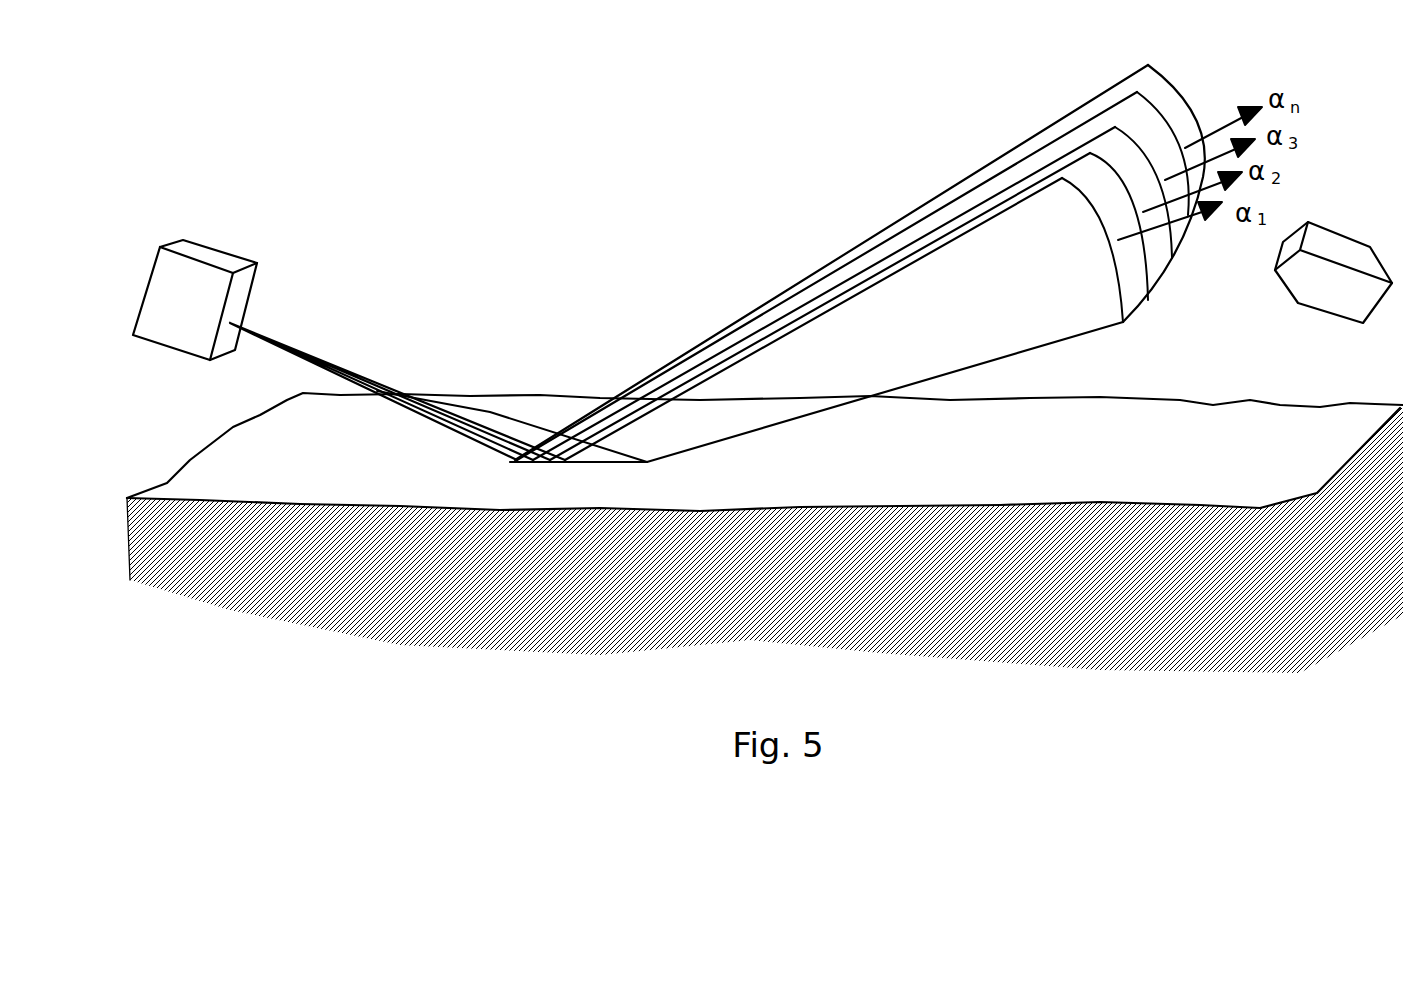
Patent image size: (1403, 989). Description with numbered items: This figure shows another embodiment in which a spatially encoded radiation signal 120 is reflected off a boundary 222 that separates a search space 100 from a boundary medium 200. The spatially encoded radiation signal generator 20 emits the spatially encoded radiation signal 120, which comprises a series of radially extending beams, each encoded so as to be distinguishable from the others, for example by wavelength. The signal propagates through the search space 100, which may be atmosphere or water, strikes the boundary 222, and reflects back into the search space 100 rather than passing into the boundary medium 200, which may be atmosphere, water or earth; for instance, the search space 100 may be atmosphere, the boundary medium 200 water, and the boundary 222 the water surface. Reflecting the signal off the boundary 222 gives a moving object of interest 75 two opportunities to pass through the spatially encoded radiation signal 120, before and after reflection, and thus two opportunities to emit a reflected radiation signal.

The spatially encoded radiation signal generator 20 is at (192, 255).
The search space 100 is at (527, 277).
The spatially encoded radiation signal 120 is at (1130, 43).
The object of interest 75 is at (1297, 305).
The boundary 222 is at (980, 466).
The boundary medium 200 is at (540, 581).